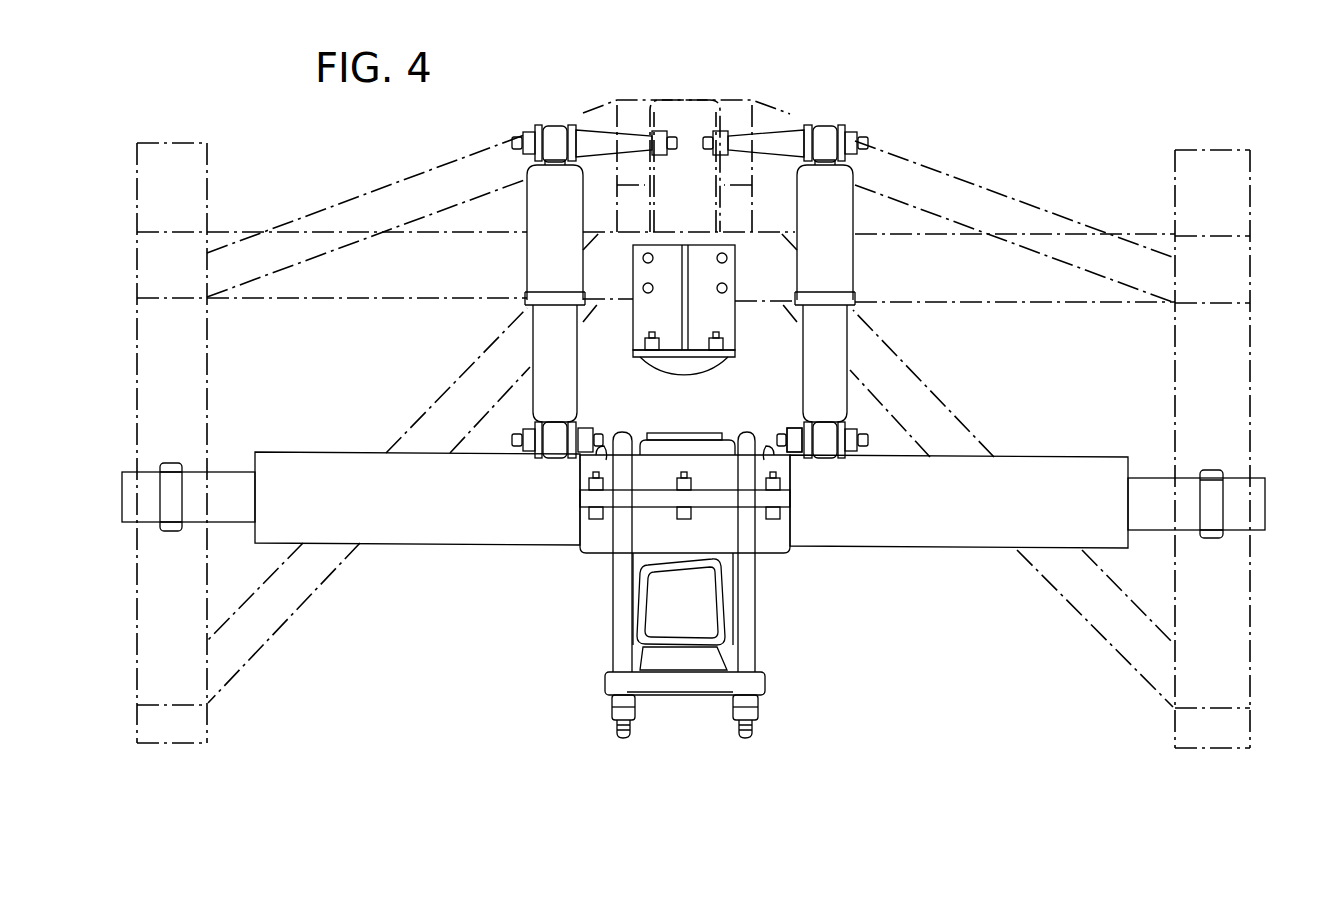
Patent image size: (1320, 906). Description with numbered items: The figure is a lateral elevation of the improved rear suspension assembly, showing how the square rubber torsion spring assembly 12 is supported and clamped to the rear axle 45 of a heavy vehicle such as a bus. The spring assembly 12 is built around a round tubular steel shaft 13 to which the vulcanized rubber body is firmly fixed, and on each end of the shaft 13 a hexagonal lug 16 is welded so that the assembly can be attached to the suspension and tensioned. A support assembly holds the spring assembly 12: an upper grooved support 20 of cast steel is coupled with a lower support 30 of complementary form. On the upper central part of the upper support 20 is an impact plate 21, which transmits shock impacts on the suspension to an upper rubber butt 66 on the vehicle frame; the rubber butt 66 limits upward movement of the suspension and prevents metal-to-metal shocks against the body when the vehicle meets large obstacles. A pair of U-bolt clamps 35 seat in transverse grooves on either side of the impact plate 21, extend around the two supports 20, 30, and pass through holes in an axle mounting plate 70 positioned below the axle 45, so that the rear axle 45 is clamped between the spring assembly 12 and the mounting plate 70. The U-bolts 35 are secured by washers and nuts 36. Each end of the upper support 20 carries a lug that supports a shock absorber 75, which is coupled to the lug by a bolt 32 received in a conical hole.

The square rubber torsion spring assembly 12 is at (935, 516).
The tubular steel shaft 13 is at (240, 456).
The hexagonal lug 16 is at (176, 462).
The upper grooved support 20 is at (689, 464).
The impact plate 21 is at (690, 433).
The lower support 30 is at (594, 514).
The bolt 32 is at (860, 446).
The U-bolt clamp 35 is at (625, 648).
The washers and nuts 36 is at (612, 712).
The rear axle 45 is at (694, 610).
The rubber butt 66 is at (669, 360).
The axle mounting plate 70 is at (683, 680).
The shock absorber 75 is at (818, 353).